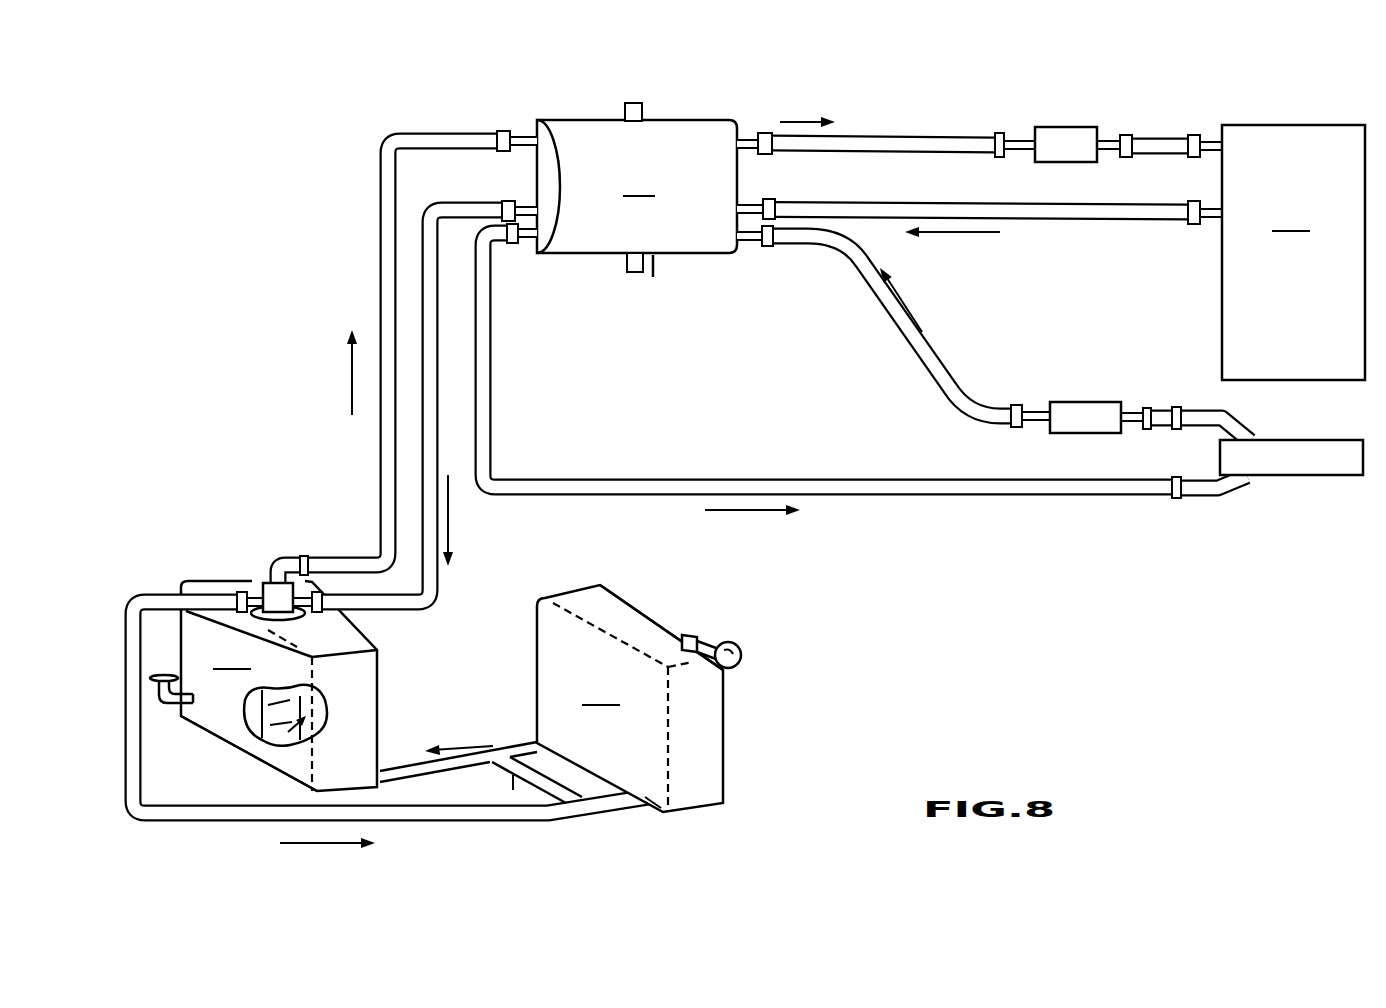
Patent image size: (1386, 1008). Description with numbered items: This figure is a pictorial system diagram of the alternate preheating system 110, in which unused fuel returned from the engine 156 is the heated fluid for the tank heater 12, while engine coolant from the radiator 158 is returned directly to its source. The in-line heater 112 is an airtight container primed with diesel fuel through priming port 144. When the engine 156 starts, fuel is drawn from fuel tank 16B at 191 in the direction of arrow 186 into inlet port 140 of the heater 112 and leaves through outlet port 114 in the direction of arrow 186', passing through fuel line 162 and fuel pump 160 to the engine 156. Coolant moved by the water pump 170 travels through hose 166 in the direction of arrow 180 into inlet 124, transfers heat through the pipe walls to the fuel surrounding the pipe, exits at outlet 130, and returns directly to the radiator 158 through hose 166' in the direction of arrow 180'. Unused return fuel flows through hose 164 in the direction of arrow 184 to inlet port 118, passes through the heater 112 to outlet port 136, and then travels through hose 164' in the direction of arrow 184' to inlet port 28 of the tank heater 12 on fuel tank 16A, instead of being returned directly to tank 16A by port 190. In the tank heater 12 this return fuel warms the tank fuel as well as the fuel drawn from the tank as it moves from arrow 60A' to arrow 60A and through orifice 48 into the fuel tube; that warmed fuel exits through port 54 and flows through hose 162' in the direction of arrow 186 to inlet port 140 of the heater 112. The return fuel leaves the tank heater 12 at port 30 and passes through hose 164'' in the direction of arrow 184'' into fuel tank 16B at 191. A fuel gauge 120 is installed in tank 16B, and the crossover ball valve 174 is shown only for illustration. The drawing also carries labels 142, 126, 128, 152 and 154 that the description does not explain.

The tank heater 12 is at (278, 601).
The fuel tank 16A is at (279, 686).
The fuel tank 16B is at (630, 698).
The inlet port 28 is at (318, 595).
The exit port 30 is at (263, 592).
The orifice 48 is at (245, 727).
The exit port 54 is at (278, 560).
The arrow 60A is at (274, 734).
The arrow 60A' is at (458, 729).
The system 110 is at (1008, 78).
The in-line heater 112 is at (637, 186).
The outlet port 114 is at (748, 132).
The inlet port 118 is at (765, 208).
The fuel gauge 120 is at (743, 645).
The inlet port 124 is at (747, 245).
The drain 126 is at (653, 277).
The bottom fitting 128 is at (630, 268).
The outlet port 130 is at (519, 242).
The outlet port 136 is at (523, 205).
The inlet port 140 is at (518, 131).
The direction arrow 142 is at (633, 88).
The priming port 144 is at (643, 112).
The outlet port 152 is at (772, 150).
The inlet port 154 is at (525, 166).
The engine 156 is at (1293, 252).
The radiator 158 is at (1364, 448).
The fuel pump 160 is at (1085, 127).
The fuel line 162 is at (997, 103).
The hose 162' is at (402, 320).
The hose 164 is at (998, 246).
The hose 164' is at (412, 377).
The hose 164'' is at (390, 738).
The hose 166 is at (1011, 338).
The hose 166' is at (865, 365).
The water pump 170 is at (1080, 402).
The crossover ball valve 174 is at (513, 782).
The arrow 180 is at (934, 298).
The arrow 180' is at (752, 545).
The arrow 184 is at (975, 259).
The arrow 184' is at (484, 520).
The arrow 184'' is at (302, 856).
The arrow 186 is at (314, 372).
The arrow 186' is at (822, 88).
The port 190 is at (168, 673).
The port 191 is at (640, 813).